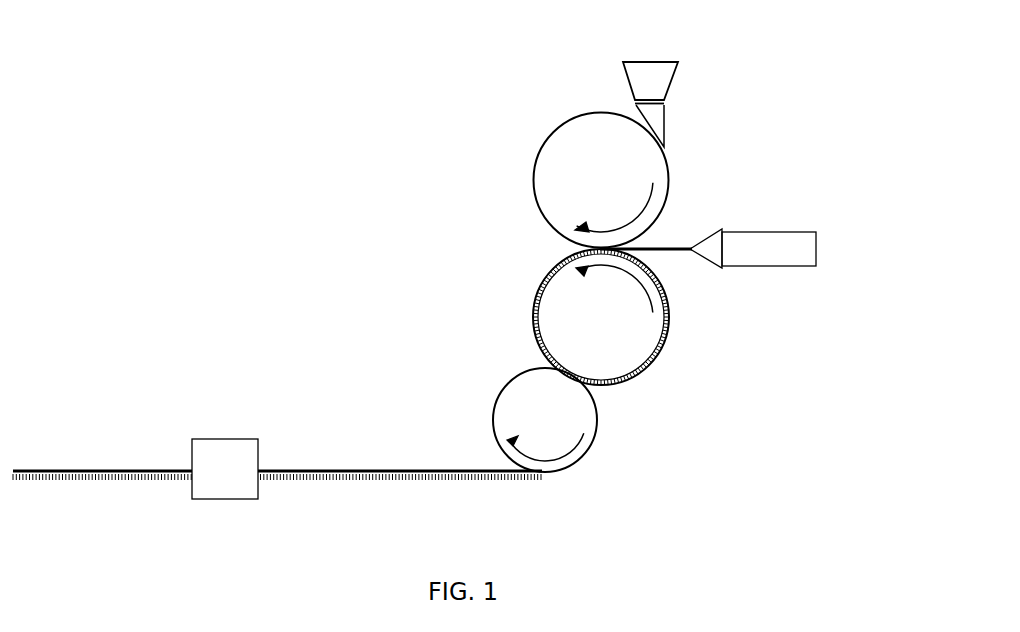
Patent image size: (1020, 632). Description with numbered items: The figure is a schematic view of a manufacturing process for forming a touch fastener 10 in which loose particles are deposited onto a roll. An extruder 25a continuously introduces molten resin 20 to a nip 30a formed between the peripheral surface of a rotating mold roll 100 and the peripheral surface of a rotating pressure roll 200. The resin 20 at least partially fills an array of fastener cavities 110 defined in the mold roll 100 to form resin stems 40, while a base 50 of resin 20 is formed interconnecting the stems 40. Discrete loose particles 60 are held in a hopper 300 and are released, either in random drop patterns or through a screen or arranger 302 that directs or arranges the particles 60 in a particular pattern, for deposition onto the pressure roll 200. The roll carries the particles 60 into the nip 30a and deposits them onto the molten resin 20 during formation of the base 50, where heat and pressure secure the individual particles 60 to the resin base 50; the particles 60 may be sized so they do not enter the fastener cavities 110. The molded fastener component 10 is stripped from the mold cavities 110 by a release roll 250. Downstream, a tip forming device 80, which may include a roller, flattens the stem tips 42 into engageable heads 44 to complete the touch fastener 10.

The touch fastener 10 is at (98, 462).
The molten resin 20 is at (667, 248).
The extruder 25a is at (816, 246).
The nip 30a is at (646, 256).
The resin stems 40 is at (368, 477).
The stem tips 42 is at (322, 480).
The engageable heads 44 is at (153, 478).
The base 50 is at (413, 470).
The loose particles 60 is at (658, 119).
The tip forming device 80 is at (225, 499).
The mold roll 100 is at (558, 317).
The fastener cavities 110 is at (534, 301).
The pressure roll 200 is at (533, 180).
The release roll 250 is at (597, 420).
The hopper 300 is at (678, 62).
The arranger 302 is at (664, 102).